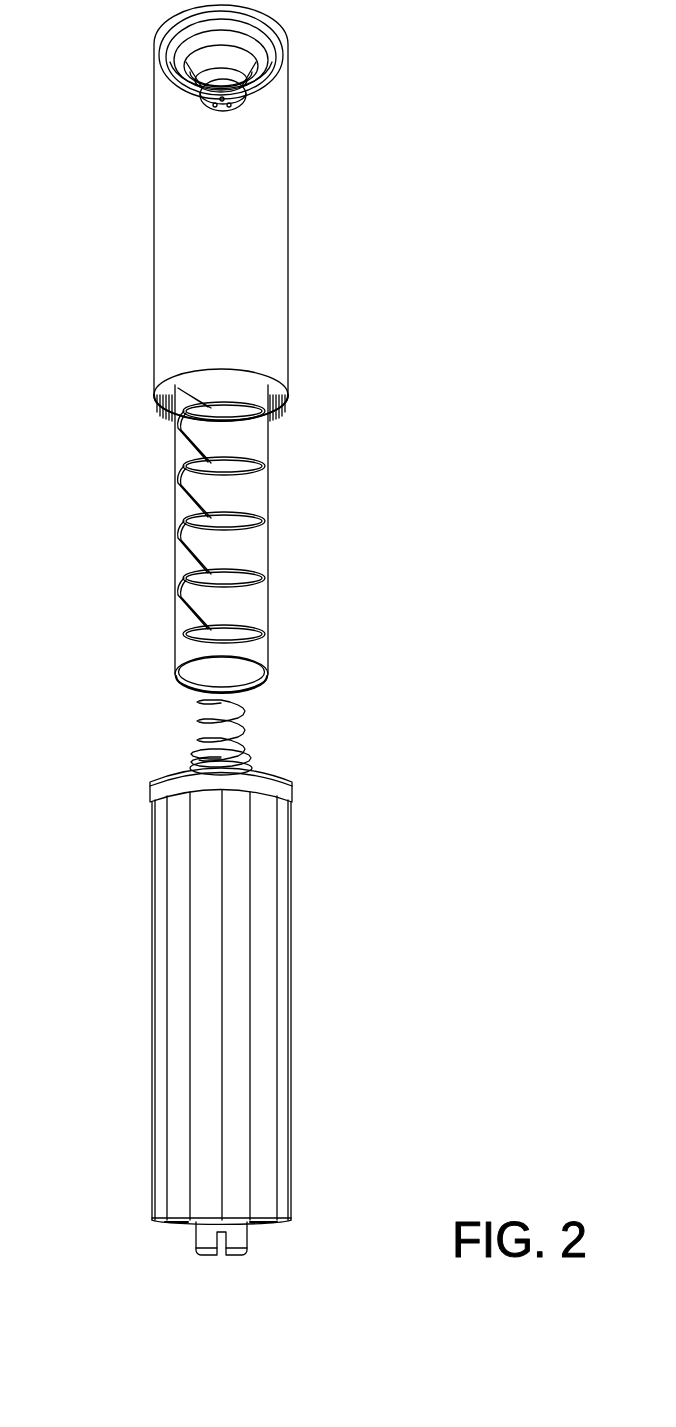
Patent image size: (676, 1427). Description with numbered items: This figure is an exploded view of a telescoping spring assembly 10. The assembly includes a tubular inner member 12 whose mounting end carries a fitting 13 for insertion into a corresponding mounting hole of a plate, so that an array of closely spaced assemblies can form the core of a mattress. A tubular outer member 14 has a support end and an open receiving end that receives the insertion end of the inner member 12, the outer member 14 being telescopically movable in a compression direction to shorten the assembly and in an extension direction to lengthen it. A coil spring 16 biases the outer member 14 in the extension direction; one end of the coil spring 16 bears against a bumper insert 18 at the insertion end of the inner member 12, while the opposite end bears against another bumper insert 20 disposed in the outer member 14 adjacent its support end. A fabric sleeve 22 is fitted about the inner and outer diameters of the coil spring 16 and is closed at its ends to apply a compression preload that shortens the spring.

The pill container assembly 10 is at (462, 487).
The body / base 12 is at (185, 985).
The bottom tab 13 is at (212, 1238).
The cap 14 is at (195, 250).
The inner tube 16 is at (268, 448).
The spring 18 is at (250, 738).
The nozzle / actuator 20 is at (258, 100).
The helical coil 22 is at (256, 497).